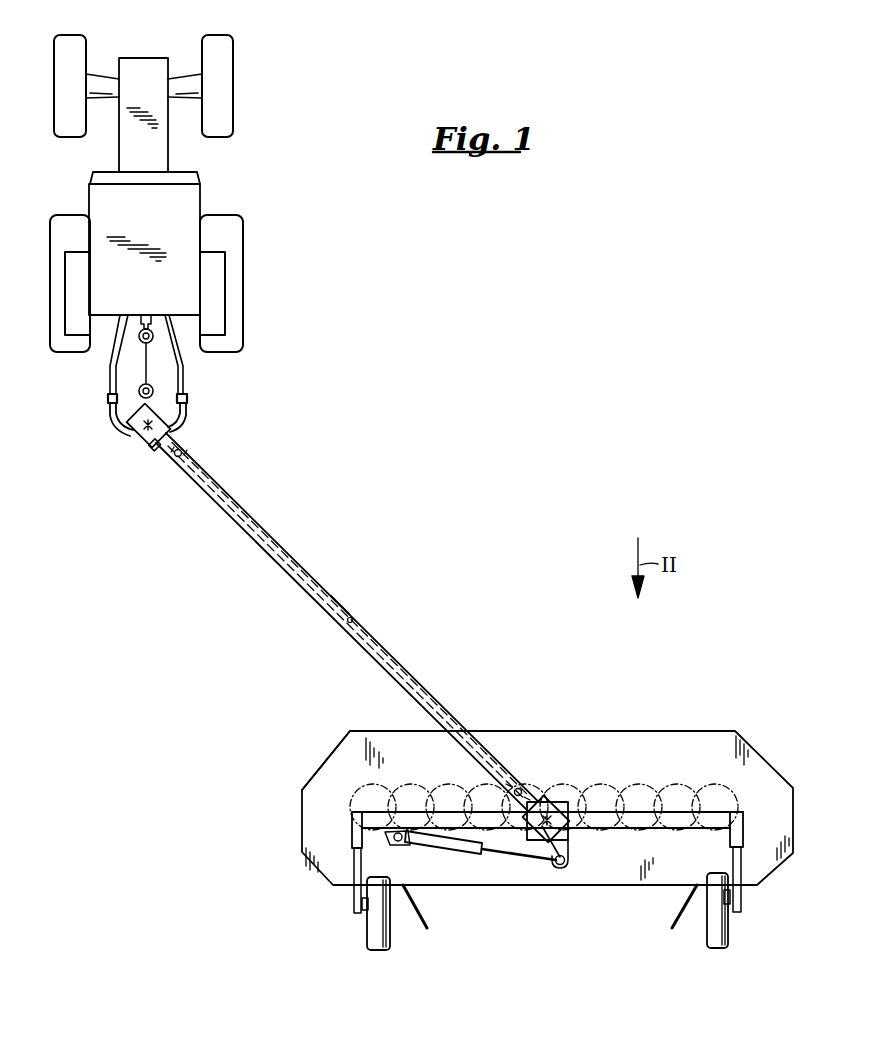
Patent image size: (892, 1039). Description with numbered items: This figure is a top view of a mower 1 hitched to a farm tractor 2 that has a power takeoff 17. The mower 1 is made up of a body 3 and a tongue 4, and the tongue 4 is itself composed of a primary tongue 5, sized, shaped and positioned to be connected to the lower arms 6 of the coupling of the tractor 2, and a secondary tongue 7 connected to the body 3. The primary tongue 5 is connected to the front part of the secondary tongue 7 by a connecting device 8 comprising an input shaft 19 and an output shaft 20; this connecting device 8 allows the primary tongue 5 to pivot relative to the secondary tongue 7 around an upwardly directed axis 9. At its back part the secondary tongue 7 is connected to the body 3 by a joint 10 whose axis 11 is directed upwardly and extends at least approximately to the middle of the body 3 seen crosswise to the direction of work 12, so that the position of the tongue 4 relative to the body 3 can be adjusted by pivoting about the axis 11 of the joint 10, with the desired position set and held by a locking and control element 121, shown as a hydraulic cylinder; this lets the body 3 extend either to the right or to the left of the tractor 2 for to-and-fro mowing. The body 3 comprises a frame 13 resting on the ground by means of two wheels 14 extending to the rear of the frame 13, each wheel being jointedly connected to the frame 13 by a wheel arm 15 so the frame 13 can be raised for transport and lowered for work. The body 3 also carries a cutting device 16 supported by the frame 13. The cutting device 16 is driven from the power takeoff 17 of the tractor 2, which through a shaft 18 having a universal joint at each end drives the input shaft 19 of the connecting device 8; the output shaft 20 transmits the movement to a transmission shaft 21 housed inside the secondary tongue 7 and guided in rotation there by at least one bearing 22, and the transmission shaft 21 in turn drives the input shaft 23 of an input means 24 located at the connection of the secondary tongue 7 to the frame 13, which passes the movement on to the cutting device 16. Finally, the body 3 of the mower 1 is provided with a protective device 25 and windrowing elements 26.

The mower 1 is at (409, 484).
The tractor 2 is at (193, 193).
The body 3 is at (580, 732).
The tongue 4 is at (347, 622).
The primary tongue 5 is at (186, 413).
The lower arms 6 is at (110, 372).
The secondary tongue 7 is at (338, 607).
The connecting device 8 is at (133, 438).
The axis 9 is at (150, 433).
The joint 10 is at (566, 830).
The axis 11 is at (470, 874).
The direction of work 12 is at (582, 472).
The frame 13 is at (641, 822).
The wheels 14 is at (370, 941).
The wheel arm 15 is at (352, 903).
The cutting device 16 is at (678, 785).
The power takeoff 17 is at (143, 323).
The shaft 18 is at (108, 397).
The input shaft 19 is at (151, 401).
The output shaft 20 is at (184, 446).
The transmission shaft 21 is at (279, 566).
The bearing 22 is at (356, 617).
The input shaft 23 is at (531, 795).
The input means 24 is at (570, 806).
The protective device 25 is at (305, 777).
The windrowing elements 26 is at (428, 924).
The locking and control element 121 is at (470, 848).